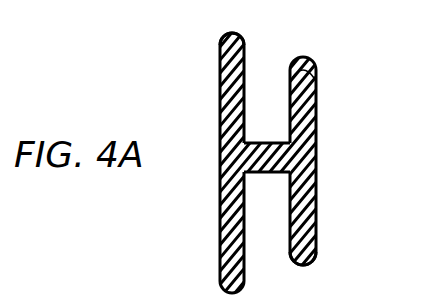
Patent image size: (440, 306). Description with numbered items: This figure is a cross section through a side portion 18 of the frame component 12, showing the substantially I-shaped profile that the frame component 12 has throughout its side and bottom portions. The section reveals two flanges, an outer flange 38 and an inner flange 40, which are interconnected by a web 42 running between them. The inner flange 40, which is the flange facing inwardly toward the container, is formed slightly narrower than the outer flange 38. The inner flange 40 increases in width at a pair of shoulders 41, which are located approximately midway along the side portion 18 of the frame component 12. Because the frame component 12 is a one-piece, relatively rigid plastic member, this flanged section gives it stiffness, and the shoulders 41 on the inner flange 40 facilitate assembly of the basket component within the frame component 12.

The frame component 12 is at (342, 73).
The side portion 18 is at (220, 79).
The outer flange 38 is at (220, 228).
The inner flange 40 is at (317, 212).
The shoulders 41 is at (298, 57).
The web 42 is at (272, 142).